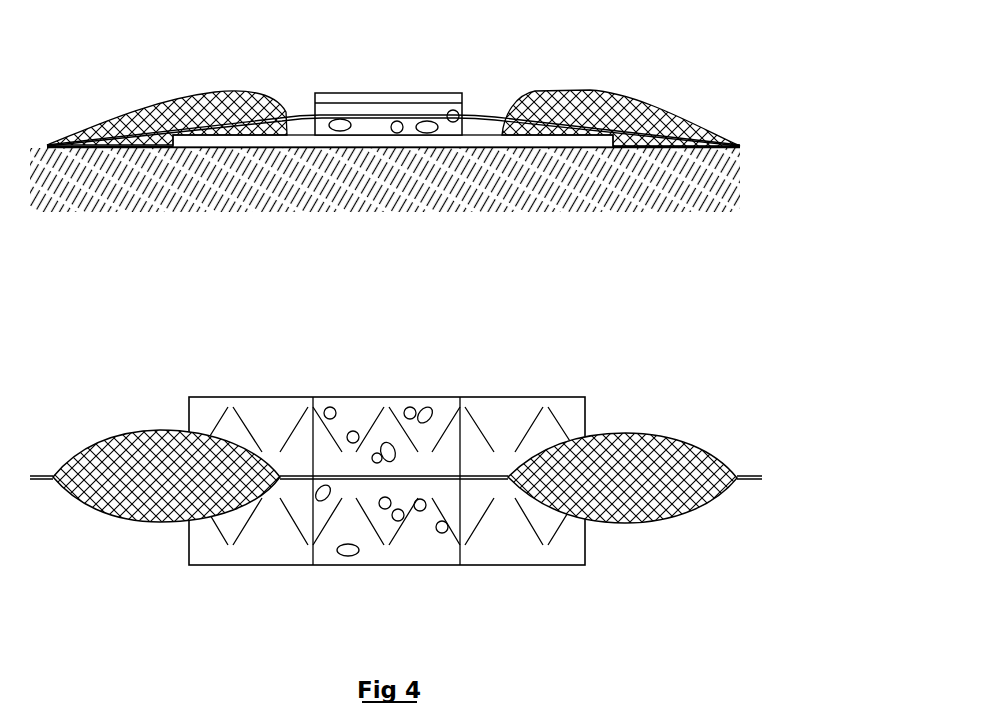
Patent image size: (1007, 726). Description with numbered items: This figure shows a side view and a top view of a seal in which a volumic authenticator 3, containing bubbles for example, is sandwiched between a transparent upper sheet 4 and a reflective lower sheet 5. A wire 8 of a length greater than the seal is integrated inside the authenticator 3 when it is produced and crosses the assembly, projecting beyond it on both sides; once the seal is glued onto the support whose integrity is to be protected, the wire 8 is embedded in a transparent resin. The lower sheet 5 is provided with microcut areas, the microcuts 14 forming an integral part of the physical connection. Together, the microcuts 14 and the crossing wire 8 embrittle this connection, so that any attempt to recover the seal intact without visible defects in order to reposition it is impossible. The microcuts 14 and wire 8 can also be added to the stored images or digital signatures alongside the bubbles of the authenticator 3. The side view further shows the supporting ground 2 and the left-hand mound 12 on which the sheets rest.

The ground 2 is at (190, 173).
The volumic authenticator 3 is at (377, 125).
The transparent upper sheet 4 is at (402, 100).
The reflective lower sheet 5 is at (553, 140).
The wire 8 is at (590, 92).
The ballast bag 12 is at (163, 108).
The microcuts 14 is at (553, 422).